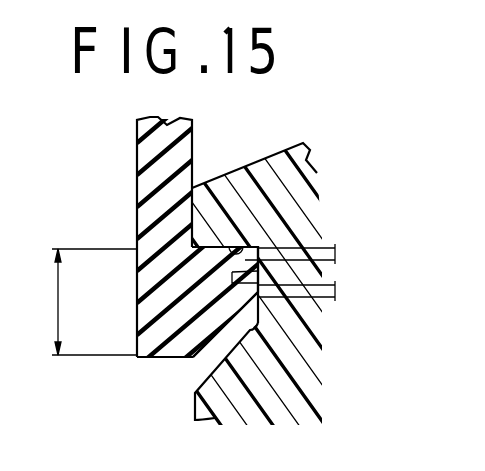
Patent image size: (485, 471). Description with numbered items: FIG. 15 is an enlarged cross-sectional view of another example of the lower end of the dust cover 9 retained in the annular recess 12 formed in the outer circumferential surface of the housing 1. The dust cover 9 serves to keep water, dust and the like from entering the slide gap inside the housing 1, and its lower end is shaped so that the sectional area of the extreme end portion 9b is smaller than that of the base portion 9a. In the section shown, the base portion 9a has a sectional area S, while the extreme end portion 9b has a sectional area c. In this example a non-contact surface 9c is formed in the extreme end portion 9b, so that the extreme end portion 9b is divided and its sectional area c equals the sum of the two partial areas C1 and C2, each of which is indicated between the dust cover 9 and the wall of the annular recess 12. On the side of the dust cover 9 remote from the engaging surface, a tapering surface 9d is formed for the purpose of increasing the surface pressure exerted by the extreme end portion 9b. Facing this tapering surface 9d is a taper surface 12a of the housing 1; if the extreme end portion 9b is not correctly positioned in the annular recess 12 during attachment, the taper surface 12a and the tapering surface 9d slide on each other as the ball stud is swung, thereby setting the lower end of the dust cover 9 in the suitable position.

The housing 1 is at (289, 162).
The dust cover 9 is at (136, 178).
The base portion 9a is at (137, 290).
The extreme end portion 9b is at (262, 262).
The non-contact surface 9c is at (243, 252).
The tapering surface 9d is at (257, 328).
The annular recess 12 is at (230, 248).
The taper surface 12a is at (200, 393).
The sectional area portion C1 is at (315, 260).
The sectional area portion C2 is at (315, 297).
The sectional area of base portion S is at (84, 302).